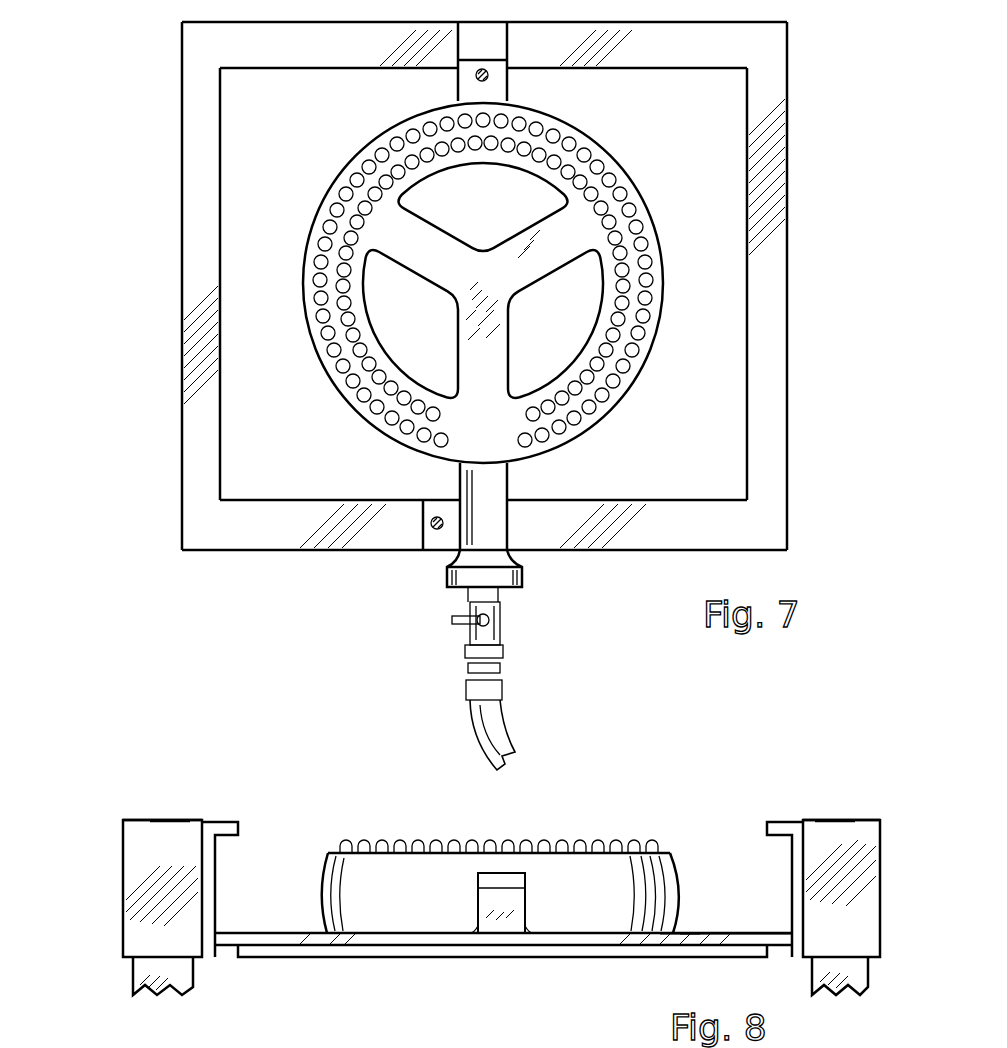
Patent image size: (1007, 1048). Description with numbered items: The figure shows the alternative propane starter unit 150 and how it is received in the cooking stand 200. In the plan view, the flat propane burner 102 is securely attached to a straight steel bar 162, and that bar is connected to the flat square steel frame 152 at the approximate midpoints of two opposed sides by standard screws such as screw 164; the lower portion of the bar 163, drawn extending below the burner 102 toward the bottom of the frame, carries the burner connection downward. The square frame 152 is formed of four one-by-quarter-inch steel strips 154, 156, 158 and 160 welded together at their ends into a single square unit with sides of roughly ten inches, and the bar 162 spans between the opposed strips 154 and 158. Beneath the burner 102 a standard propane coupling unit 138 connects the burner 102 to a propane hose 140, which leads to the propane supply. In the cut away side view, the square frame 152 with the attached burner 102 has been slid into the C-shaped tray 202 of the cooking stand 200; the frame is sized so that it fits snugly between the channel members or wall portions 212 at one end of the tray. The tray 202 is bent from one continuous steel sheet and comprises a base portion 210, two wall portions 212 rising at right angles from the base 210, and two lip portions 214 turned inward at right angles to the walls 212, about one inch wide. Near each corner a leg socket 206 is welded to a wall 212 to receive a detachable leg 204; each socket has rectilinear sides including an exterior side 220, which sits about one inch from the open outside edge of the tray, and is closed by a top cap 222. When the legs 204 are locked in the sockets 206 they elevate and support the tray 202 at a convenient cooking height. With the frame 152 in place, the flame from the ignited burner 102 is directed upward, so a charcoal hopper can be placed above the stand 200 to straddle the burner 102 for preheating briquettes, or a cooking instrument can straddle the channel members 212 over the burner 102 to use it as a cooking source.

In FIG. 7, the propane burner 102 is at (600, 148).
In FIG. 8, the propane burner 102 is at (437, 850).
In FIG. 7, the propane coupling unit 138 is at (466, 635).
In FIG. 7, the propane hose 140 is at (478, 727).
In FIG. 7, the alternative propane starter unit 150 is at (802, 144).
In FIG. 8, the alternative propane starter unit 150 is at (328, 832).
In FIG. 7, the square steel frame 152 is at (790, 352).
In FIG. 8, the square steel frame 152 is at (698, 933).
In FIG. 8, the steel strip 154 is at (260, 932).
In FIG. 7, the steel strip 156 is at (778, 240).
In FIG. 7, the steel strip 158 is at (582, 545).
In FIG. 7, the steel strip 160 is at (186, 413).
In FIG. 7, the straight steel bar 162 is at (507, 88).
In FIG. 7, the lower mounting tab 163 is at (512, 488).
In FIG. 7, the screw 164 is at (475, 77).
In FIG. 8, the cooking stand 200 is at (797, 802).
In FIG. 8, the C-shaped tray 202 is at (778, 918).
In FIG. 8, the leg 204 is at (140, 975).
In FIG. 8, the leg socket 206 is at (138, 828).
In FIG. 8, the base portion 210 is at (460, 950).
In FIG. 8, the wall portion 212 is at (215, 885).
In FIG. 8, the lip portion 214 is at (223, 820).
In FIG. 8, the exterior side 220 is at (127, 878).
In FIG. 8, the top cap 222 is at (165, 820).